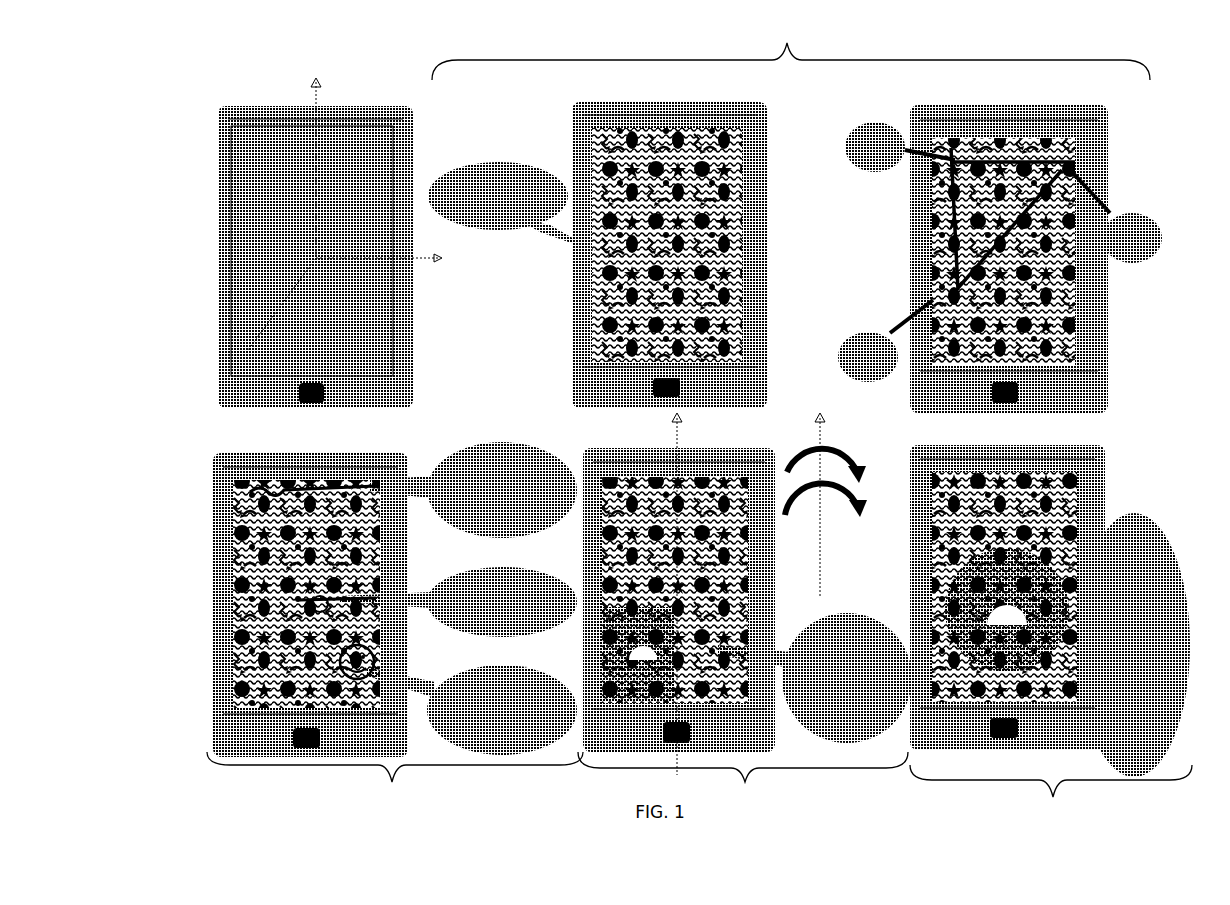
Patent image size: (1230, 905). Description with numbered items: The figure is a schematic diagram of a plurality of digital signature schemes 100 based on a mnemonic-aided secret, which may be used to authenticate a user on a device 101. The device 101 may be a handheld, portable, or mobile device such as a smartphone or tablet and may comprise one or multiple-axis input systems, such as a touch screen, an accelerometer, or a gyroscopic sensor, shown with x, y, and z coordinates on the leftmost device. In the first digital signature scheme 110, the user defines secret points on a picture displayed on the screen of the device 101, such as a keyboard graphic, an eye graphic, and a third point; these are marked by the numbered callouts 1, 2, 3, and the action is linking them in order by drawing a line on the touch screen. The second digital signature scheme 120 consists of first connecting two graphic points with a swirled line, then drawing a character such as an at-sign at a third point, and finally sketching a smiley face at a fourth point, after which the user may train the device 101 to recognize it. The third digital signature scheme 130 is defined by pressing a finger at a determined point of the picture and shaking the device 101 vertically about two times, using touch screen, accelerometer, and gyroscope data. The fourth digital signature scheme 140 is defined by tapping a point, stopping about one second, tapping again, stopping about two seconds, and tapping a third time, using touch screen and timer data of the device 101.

The digital signature schemes 100 is at (198, 70).
The first digital signature scheme 110 is at (353, 103).
The device 101 is at (748, 103).
The second digital signature scheme 120 is at (395, 625).
The third digital signature scheme 130 is at (745, 611).
The fourth digital signature scheme 140 is at (1051, 666).
The first secret point 1 is at (900, 147).
The second secret point 2 is at (1117, 218).
The third secret point 3 is at (885, 341).